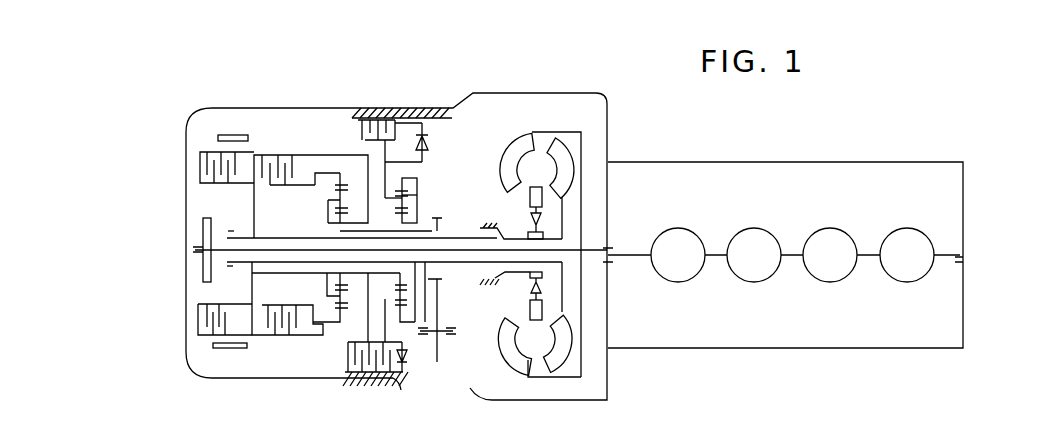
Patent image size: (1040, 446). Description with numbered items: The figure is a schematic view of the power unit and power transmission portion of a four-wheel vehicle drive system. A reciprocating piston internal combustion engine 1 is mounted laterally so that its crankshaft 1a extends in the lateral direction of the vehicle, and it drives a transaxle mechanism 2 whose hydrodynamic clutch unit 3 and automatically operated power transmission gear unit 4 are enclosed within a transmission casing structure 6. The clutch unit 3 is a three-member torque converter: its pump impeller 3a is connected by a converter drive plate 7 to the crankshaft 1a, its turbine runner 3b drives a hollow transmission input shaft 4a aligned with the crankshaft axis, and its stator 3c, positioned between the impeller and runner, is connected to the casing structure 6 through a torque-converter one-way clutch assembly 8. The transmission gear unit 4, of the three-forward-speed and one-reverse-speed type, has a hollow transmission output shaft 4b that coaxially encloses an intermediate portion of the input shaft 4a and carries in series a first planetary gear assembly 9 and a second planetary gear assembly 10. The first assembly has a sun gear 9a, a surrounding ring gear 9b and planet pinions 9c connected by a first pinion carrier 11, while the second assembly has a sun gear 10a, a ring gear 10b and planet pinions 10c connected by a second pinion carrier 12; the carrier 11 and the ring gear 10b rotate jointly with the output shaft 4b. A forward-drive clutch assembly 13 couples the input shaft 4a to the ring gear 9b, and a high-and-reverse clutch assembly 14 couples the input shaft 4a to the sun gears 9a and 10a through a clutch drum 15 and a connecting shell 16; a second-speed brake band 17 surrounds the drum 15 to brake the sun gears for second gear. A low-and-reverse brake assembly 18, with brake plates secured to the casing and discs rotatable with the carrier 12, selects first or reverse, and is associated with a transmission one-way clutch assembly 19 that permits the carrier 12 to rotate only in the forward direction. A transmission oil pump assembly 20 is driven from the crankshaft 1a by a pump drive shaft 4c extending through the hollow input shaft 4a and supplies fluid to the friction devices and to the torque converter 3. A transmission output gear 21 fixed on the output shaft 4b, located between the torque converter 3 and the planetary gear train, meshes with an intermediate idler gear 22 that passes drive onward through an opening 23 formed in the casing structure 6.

The internal combustion engine 1 is at (779, 159).
The crankshaft 1a is at (634, 258).
The transaxle mechanism 2 is at (203, 384).
The hydrodynamic clutch unit 3 is at (544, 115).
The pump impeller 3a is at (516, 148).
The turbine runner 3b is at (568, 143).
The stator 3c is at (527, 193).
The power transmission gear unit 4 is at (489, 361).
The transmission input shaft 4a is at (233, 232).
The transmission output shaft 4b is at (327, 274).
The pump drive shaft 4c is at (223, 252).
The transmission casing structure 6 is at (553, 400).
The converter drive plate 7 is at (581, 350).
The torque-converter one-way clutch assembly 8 is at (530, 286).
The first planetary gear assembly 9 is at (349, 170).
The sun gear 9a is at (328, 222).
The ring gear 9b is at (340, 186).
The planet pinions 9c is at (333, 201).
The second planetary gear assembly 10 is at (417, 174).
The sun gear 10a is at (420, 228).
The ring gear 10b is at (417, 182).
The planet pinions 10c is at (415, 205).
The first pinion carrier 11 is at (327, 297).
The second pinion carrier 12 is at (385, 300).
The forward-drive clutch assembly 13 is at (299, 163).
The high-and-reverse clutch assembly 14 is at (204, 141).
The clutch drum 15 is at (275, 337).
The connecting shell 16 is at (368, 329).
The second-speed brake band 17 is at (222, 350).
The low-and-reverse brake assembly 18 is at (389, 131).
The transmission one-way clutch assembly 19 is at (430, 124).
The transmission oil pump assembly 20 is at (201, 232).
The transmission output gear 21 is at (442, 278).
The intermediate idler gear 22 is at (440, 350).
The opening 23 is at (458, 390).